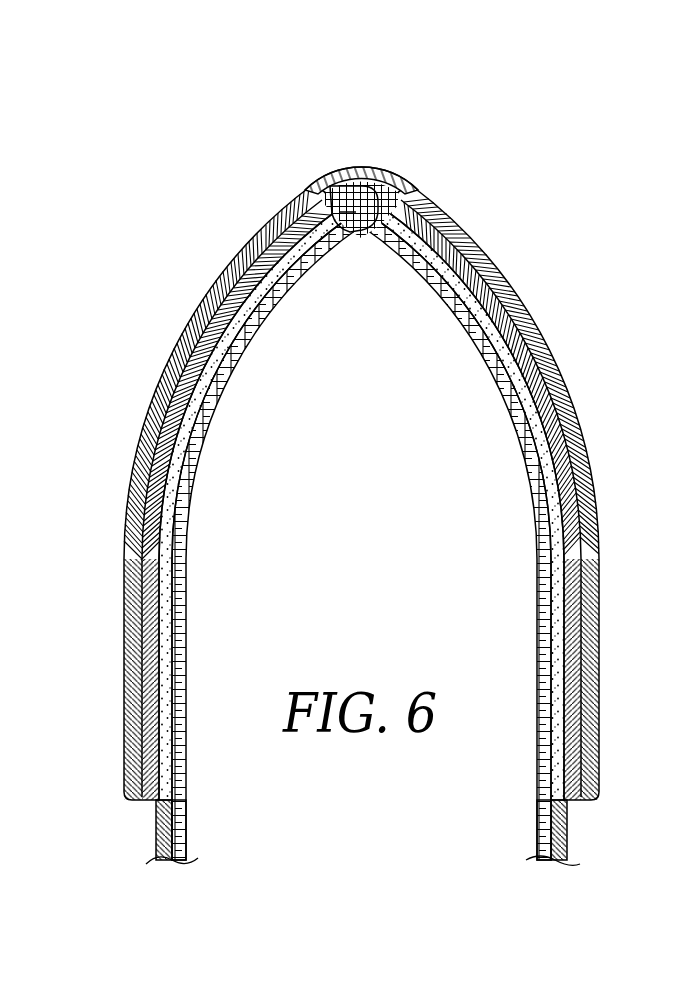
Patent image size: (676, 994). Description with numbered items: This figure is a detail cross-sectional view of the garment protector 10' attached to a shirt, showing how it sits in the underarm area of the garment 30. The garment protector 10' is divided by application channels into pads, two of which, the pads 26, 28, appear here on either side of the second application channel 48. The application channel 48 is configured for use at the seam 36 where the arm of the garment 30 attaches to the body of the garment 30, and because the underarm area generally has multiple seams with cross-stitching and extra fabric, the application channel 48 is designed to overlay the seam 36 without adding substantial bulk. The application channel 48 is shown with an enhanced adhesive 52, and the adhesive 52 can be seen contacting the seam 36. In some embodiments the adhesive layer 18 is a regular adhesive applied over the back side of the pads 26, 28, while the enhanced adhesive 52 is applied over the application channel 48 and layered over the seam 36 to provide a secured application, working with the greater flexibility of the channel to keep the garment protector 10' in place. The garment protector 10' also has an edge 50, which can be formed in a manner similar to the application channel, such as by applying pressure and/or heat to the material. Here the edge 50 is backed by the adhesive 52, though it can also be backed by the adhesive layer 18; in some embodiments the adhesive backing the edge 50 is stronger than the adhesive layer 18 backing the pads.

The garment protector 10' is at (359, 444).
The adhesive layer 18 is at (173, 750).
The pad 26 is at (137, 452).
The pad 28 is at (586, 452).
The garment 30 is at (397, 351).
The seam 36 is at (357, 240).
The second application channel 48 is at (352, 166).
The edge 50 is at (160, 836).
The enhanced adhesive 52 is at (374, 170).